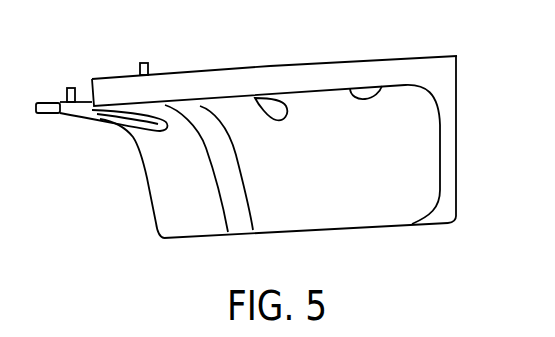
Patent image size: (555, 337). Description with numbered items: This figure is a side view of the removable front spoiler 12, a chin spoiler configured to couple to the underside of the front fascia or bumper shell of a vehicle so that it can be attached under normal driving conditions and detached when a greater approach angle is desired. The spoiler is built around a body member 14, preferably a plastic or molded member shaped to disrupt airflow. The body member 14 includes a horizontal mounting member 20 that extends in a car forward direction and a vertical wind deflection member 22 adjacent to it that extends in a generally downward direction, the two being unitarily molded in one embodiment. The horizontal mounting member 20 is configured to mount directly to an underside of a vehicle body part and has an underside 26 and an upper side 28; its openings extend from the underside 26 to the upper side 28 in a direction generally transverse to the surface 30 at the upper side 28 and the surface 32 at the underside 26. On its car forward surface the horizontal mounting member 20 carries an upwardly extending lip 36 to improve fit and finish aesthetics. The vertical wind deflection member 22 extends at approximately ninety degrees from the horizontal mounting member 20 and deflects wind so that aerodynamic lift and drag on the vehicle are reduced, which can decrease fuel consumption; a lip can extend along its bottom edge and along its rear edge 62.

The removable front spoiler 12 is at (150, 222).
The body member 14 is at (243, 234).
The horizontal mounting member 20 is at (93, 78).
The vertical wind deflection member 22 is at (380, 192).
The underside 26 is at (93, 110).
The upper side 28 is at (225, 69).
The surface 30 is at (81, 100).
The surface 32 is at (380, 91).
The upwardly extending lip 36 is at (307, 64).
The rear edge 62 is at (458, 93).